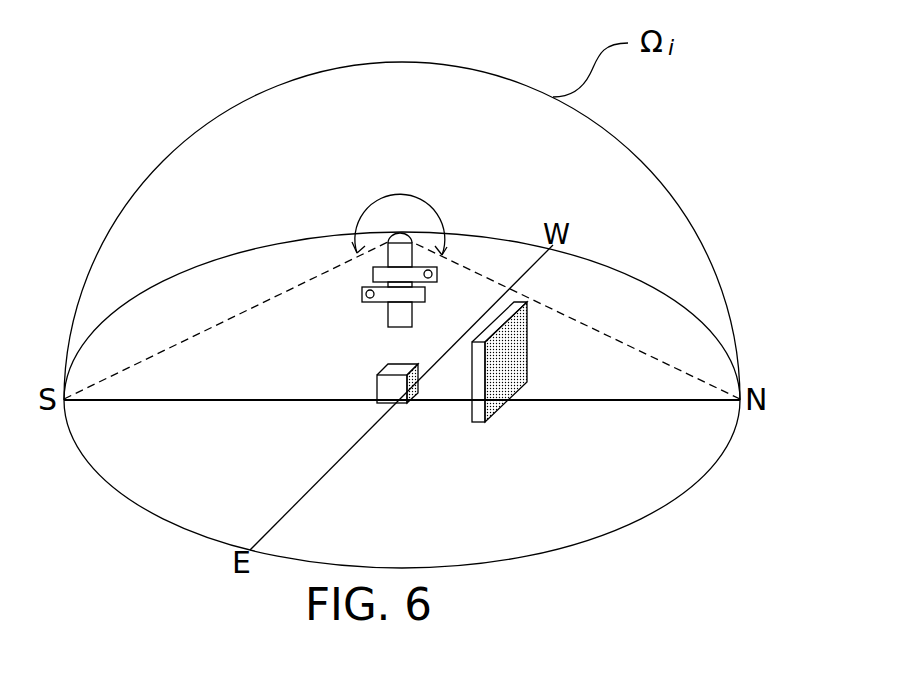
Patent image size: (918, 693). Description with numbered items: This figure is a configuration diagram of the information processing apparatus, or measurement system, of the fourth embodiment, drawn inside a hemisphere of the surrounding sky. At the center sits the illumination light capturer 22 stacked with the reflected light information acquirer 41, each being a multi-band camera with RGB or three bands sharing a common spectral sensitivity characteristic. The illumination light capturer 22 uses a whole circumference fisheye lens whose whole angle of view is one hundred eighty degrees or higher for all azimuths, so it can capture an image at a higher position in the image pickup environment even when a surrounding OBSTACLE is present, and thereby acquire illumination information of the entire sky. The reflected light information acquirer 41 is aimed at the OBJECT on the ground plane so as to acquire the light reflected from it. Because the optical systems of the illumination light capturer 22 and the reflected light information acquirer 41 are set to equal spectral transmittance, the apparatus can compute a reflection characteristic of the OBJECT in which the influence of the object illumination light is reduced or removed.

The illumination light capturer 22 is at (408, 267).
The reflected light information acquirer 41 is at (362, 293).
The object OBJECT is at (377, 390).
The obstacle OBSTACLE is at (488, 382).